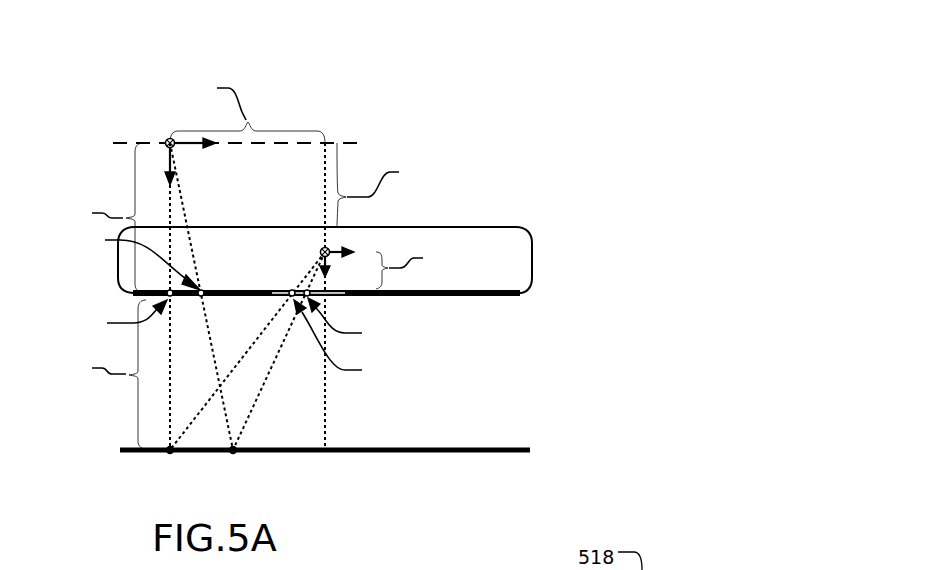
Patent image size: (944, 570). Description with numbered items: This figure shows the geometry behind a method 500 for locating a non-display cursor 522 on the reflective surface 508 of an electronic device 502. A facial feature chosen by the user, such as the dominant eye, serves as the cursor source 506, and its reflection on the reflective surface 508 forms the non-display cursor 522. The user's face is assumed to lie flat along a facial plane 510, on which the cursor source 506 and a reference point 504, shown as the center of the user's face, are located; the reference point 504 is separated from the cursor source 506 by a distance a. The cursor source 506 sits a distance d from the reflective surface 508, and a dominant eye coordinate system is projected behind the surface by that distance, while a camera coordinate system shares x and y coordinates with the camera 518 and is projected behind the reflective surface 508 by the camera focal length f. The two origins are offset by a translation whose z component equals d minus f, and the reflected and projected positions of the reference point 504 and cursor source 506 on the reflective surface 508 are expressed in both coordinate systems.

The method 500 is at (130, 62).
The electronic device 502 is at (533, 256).
The reference point 504 is at (234, 452).
The cursor source 506 is at (168, 452).
The reflective surface 508 is at (522, 294).
The facial plane 510 is at (530, 451).
The camera 518 is at (302, 290).
The non-display cursor 522 is at (157, 297).